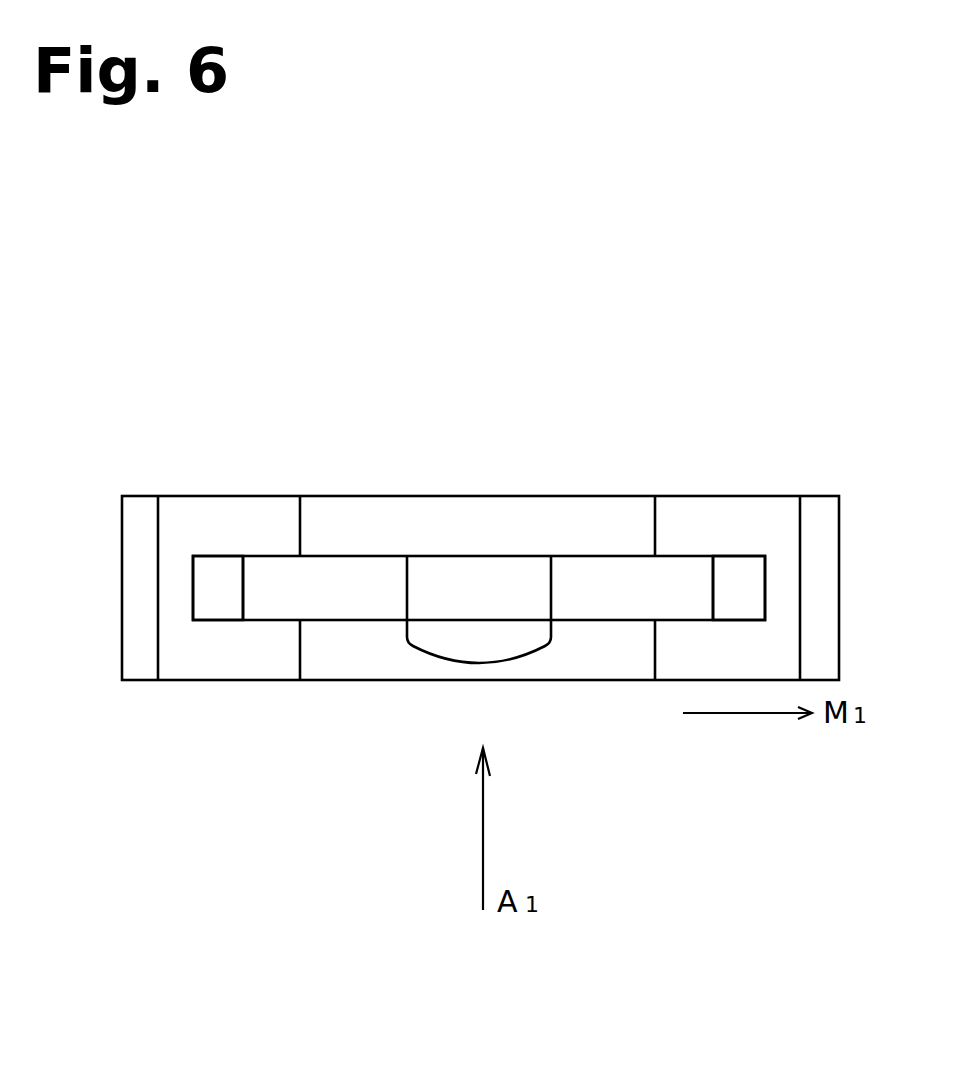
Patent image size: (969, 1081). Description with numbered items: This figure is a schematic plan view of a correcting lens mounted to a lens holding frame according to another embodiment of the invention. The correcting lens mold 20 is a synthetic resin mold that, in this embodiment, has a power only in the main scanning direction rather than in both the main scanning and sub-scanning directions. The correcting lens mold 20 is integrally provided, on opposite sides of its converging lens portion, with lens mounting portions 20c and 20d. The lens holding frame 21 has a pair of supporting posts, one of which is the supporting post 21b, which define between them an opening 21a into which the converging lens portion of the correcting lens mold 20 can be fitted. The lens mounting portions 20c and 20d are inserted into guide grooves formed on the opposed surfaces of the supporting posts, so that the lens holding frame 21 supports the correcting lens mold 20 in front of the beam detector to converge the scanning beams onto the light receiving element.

The correcting lens mold 20 is at (567, 695).
The lens holding frame 21 is at (622, 495).
The opening 21a is at (205, 618).
The supporting post 21b is at (740, 618).
The lens mounting portion 20c is at (242, 581).
The lens mounting portion 20d is at (715, 583).